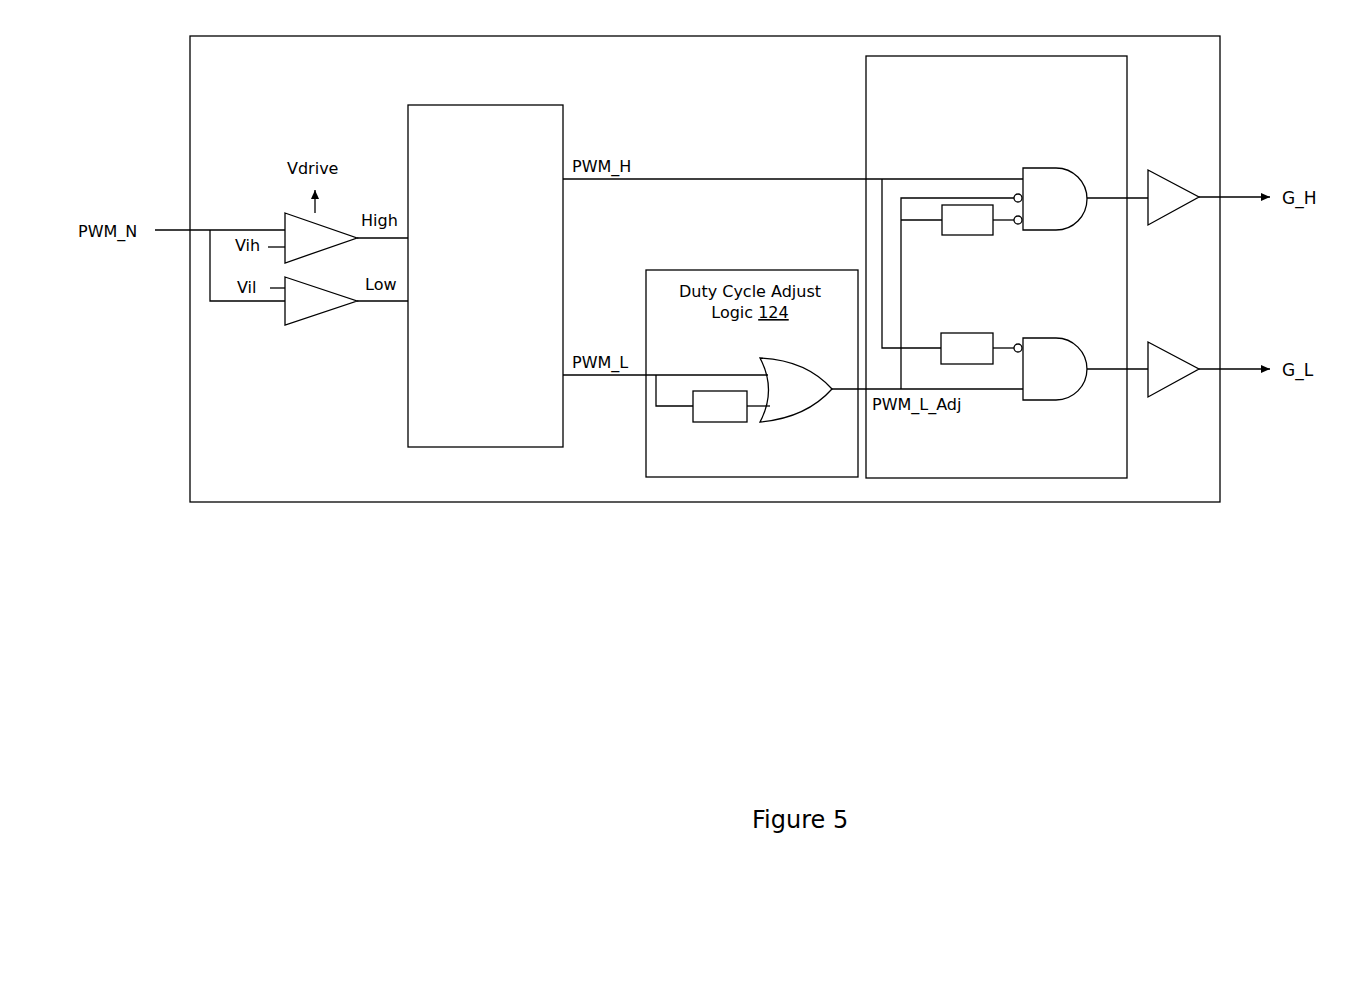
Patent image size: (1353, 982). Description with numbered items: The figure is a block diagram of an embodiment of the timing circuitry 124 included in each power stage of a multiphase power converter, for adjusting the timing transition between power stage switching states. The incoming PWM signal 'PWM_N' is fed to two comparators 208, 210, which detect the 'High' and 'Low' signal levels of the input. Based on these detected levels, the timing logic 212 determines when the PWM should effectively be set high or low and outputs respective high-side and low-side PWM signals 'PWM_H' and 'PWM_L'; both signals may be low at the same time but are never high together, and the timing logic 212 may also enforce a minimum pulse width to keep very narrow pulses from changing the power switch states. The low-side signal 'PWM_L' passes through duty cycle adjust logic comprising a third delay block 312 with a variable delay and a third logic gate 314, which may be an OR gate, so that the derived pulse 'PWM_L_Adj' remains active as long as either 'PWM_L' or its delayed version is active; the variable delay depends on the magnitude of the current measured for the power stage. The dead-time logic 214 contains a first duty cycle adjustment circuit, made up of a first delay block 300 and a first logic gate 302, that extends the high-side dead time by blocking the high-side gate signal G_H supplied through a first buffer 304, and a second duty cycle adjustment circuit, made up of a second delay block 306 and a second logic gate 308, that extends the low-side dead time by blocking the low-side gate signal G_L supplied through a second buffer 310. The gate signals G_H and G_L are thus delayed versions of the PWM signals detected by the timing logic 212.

The timing circuitry 124 is at (705, 269).
The comparator 208 is at (321, 238).
The comparator 210 is at (321, 301).
The timing logic 212 is at (485, 276).
The dead-time logic 214 is at (996, 267).
The first delay block 300 is at (966, 237).
The first logic gate 302 is at (1050, 199).
The first buffer 304 is at (1173, 197).
The second delay block 306 is at (966, 331).
The second logic gate 308 is at (1050, 369).
The second buffer 310 is at (1173, 369).
The third delay block 312 is at (720, 422).
The third logic gate 314 is at (796, 390).